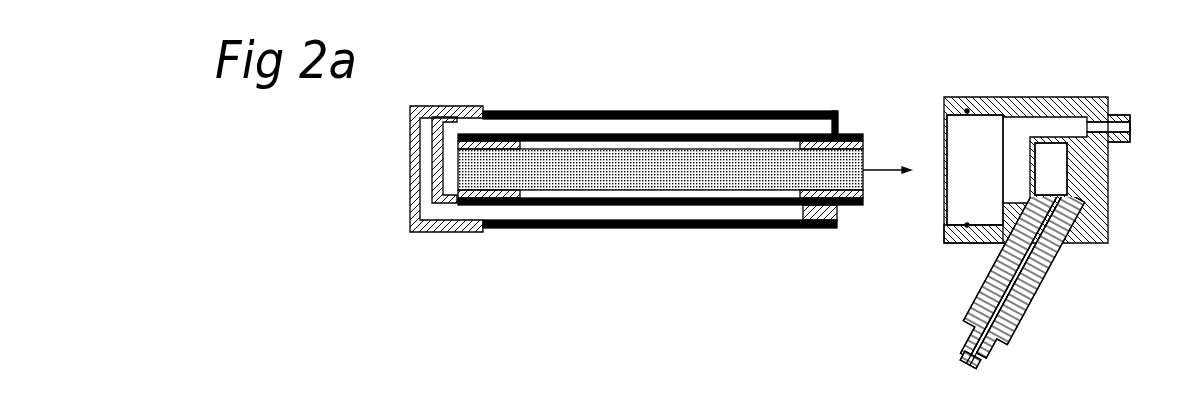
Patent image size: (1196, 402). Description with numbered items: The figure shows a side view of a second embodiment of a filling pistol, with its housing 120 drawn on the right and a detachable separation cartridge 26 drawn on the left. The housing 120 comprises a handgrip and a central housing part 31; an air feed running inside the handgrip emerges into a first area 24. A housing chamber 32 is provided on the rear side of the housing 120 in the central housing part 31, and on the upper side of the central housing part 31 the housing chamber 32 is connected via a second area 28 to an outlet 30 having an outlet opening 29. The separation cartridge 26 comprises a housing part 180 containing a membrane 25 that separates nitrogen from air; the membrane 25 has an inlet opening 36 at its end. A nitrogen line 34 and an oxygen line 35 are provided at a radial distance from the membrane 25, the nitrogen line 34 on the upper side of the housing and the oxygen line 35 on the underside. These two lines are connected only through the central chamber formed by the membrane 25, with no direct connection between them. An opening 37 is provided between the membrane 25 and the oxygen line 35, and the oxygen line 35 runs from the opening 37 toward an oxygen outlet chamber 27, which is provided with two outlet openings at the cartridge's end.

The separation cartridge 26 is at (634, 157).
The oxygen outlet chamber 27 is at (427, 150).
The membrane 25 is at (594, 162).
The nitrogen line 34 is at (777, 118).
The oxygen line 35 is at (618, 212).
The housing part 180 is at (820, 112).
The opening 37 is at (785, 205).
The inlet opening 36 is at (880, 183).
The housing 120 is at (1053, 220).
The second area 28 is at (1063, 122).
The housing chamber 32 is at (957, 127).
The central housing part 31 is at (957, 238).
The outlet 30 is at (1118, 115).
The outlet opening 29 is at (1125, 128).
The first area 24 is at (1060, 178).